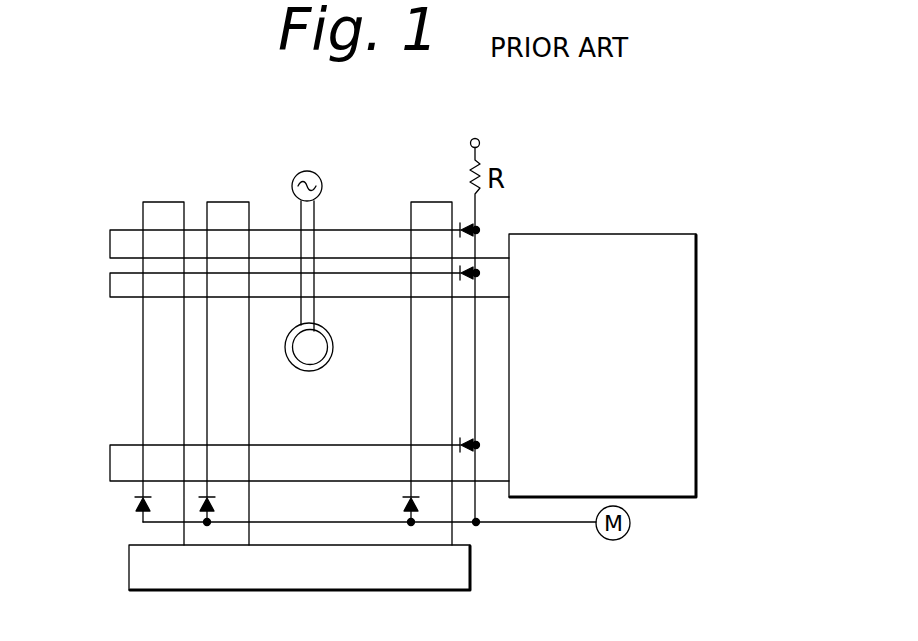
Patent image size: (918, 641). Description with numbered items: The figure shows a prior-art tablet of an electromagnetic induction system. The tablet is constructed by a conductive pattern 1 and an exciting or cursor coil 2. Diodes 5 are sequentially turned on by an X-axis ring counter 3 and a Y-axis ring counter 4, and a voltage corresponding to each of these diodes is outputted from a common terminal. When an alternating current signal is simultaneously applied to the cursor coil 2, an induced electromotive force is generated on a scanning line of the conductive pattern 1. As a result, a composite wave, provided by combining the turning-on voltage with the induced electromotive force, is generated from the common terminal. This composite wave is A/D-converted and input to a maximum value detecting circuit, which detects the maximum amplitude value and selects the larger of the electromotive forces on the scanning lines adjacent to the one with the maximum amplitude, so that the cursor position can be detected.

The conductive pattern 1 is at (110, 465).
The cursor coil 2 is at (296, 352).
The X-axis ring counter 3 is at (421, 592).
The Y-axis ring counter 4 is at (697, 391).
The diodes 5 is at (139, 508).